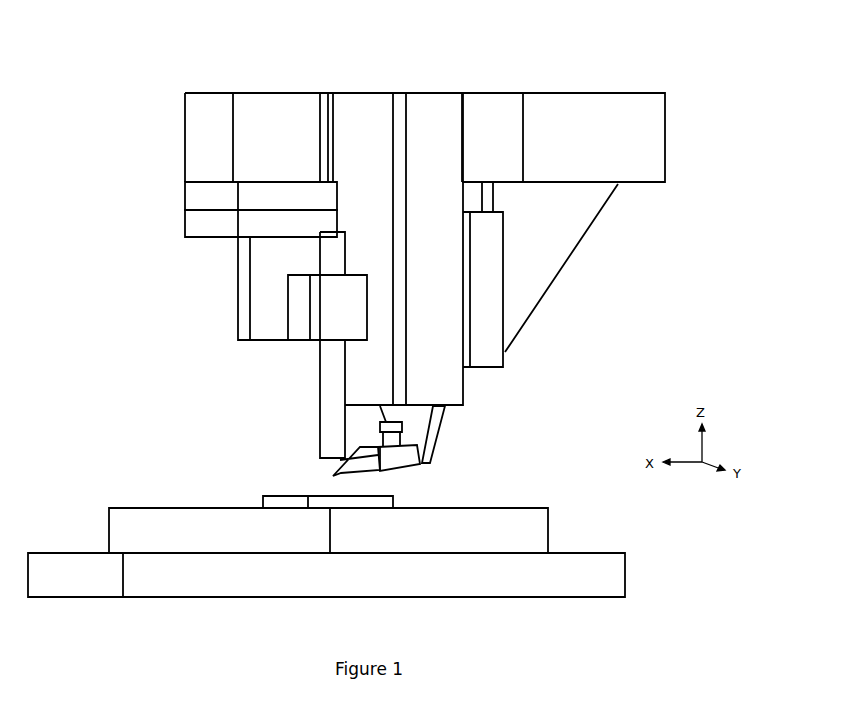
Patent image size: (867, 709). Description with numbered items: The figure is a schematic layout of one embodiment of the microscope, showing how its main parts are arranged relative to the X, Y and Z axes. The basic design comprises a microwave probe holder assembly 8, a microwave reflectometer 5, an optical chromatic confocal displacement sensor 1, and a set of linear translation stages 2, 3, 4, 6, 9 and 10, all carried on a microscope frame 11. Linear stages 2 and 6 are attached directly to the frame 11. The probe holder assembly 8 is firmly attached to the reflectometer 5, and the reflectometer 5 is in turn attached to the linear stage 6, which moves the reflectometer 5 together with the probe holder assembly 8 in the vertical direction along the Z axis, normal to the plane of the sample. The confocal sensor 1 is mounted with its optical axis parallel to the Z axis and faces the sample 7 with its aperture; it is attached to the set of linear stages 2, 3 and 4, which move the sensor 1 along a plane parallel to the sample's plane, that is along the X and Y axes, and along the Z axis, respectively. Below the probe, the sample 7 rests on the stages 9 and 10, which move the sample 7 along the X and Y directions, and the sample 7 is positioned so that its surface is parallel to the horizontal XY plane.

The optical chromatic confocal displacement sensor 1 is at (328, 405).
The linear translation stage 2 is at (193, 194).
The linear translation stage 3 is at (193, 222).
The linear translation stage 4 is at (260, 288).
The reflectometer 5 is at (440, 381).
The linear translation stage 6 is at (492, 285).
The sample 7 is at (322, 493).
The probe holder assembly 8 is at (363, 467).
The linear translation stage 9 is at (532, 530).
The linear translation stage 10 is at (77, 565).
The microscope frame 11 is at (627, 140).